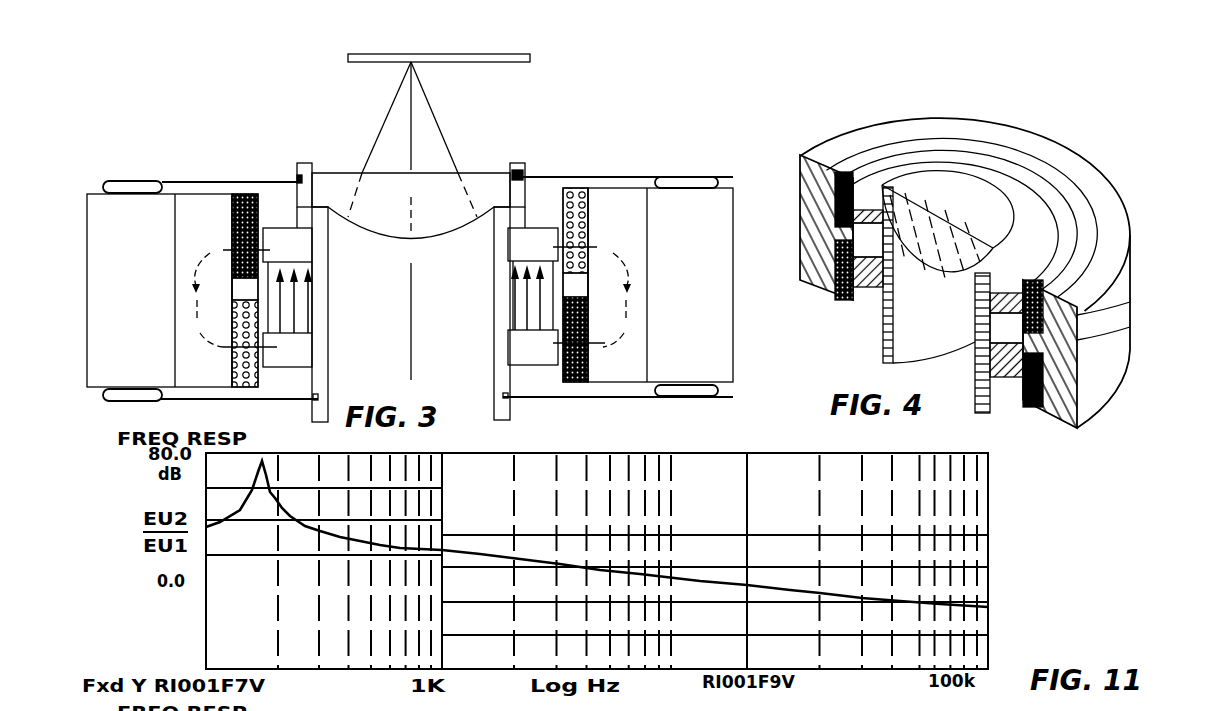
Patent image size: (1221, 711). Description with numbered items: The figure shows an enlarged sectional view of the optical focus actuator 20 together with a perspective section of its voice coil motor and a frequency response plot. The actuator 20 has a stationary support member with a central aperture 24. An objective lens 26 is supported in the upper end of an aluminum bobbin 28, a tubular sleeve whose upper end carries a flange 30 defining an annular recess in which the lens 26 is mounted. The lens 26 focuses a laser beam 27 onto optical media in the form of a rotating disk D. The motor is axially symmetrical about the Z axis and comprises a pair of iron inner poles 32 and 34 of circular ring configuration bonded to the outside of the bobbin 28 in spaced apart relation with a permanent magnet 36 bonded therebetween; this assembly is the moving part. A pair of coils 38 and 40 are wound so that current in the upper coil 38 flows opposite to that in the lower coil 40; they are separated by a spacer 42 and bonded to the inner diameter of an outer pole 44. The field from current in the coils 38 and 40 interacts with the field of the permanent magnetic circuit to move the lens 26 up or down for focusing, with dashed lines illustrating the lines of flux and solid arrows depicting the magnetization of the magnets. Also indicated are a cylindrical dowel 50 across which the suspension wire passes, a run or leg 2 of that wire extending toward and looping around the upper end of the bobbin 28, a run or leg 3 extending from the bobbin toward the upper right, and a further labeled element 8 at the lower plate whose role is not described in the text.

In FIG. 3, the run or leg 2 is at (252, 182).
In FIG. 3, the run or leg 3 is at (632, 177).
In FIG. 3, the bottom plate 8 is at (262, 400).
In FIG. 3, the optical focus actuator 20 is at (228, 157).
In FIG. 3, the central aperture 24 is at (177, 366).
In FIG. 3, the objective lens 26 is at (472, 180).
In FIG. 4, the objective lens 26 is at (970, 187).
In FIG. 3, the laser beam 27 is at (437, 113).
In FIG. 3, the bobbin 28 is at (500, 283).
In FIG. 4, the bobbin 28 is at (883, 345).
In FIG. 3, the flange 30 is at (523, 177).
In FIG. 3, the inner pole 32 is at (510, 242).
In FIG. 4, the inner pole 32 is at (1077, 305).
In FIG. 3, the inner pole 34 is at (510, 345).
In FIG. 4, the inner pole 34 is at (1077, 370).
In FIG. 3, the permanent magnet 36 is at (508, 310).
In FIG. 4, the permanent magnet 36 is at (1077, 348).
In FIG. 3, the coil 38 is at (590, 207).
In FIG. 4, the coil 38 is at (1068, 210).
In FIG. 3, the coil 40 is at (590, 360).
In FIG. 4, the coil 40 is at (1028, 407).
In FIG. 3, the spacer 42 is at (592, 292).
In FIG. 3, the outer pole 44 is at (637, 220).
In FIG. 3, the dowel 50 is at (148, 182).
In FIG. 3, the rotating disk D is at (442, 53).
In FIG. 3, the Z axis Z is at (410, 123).